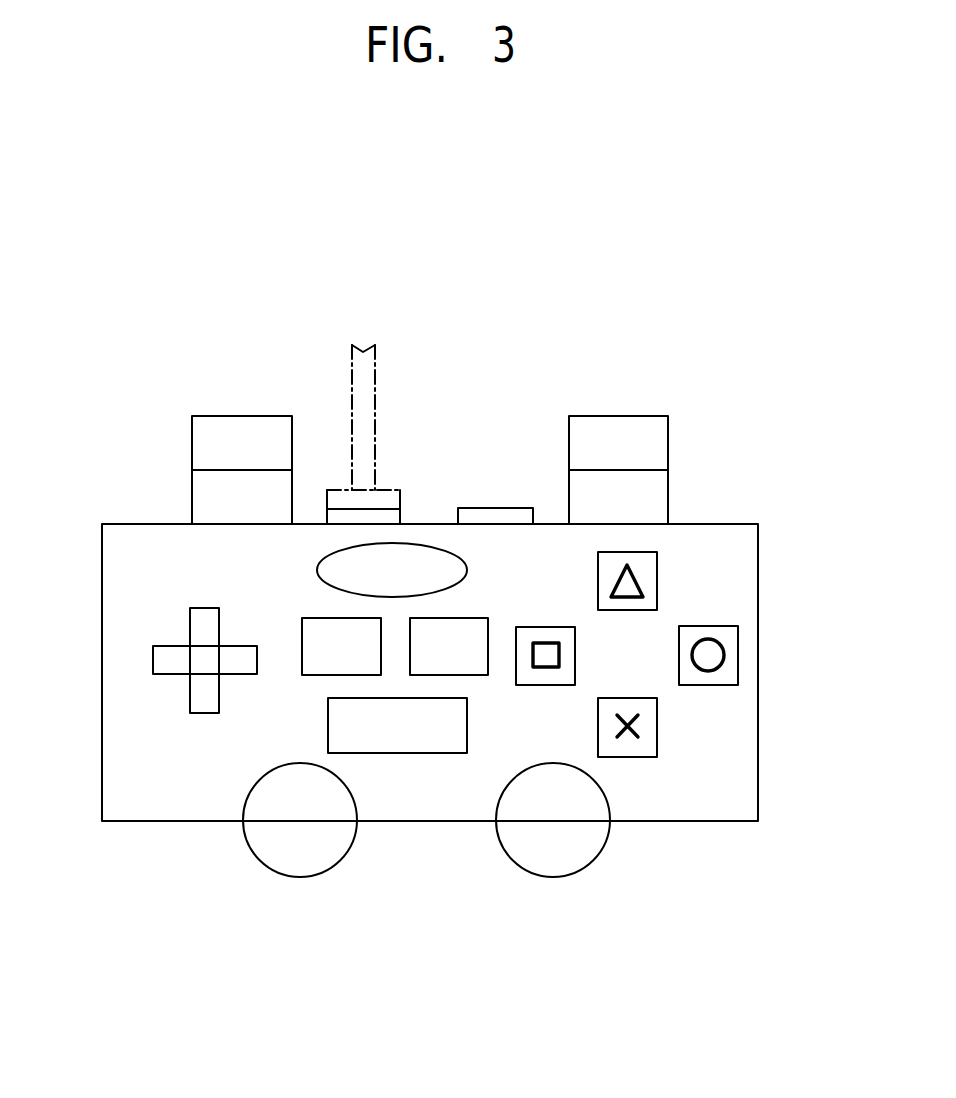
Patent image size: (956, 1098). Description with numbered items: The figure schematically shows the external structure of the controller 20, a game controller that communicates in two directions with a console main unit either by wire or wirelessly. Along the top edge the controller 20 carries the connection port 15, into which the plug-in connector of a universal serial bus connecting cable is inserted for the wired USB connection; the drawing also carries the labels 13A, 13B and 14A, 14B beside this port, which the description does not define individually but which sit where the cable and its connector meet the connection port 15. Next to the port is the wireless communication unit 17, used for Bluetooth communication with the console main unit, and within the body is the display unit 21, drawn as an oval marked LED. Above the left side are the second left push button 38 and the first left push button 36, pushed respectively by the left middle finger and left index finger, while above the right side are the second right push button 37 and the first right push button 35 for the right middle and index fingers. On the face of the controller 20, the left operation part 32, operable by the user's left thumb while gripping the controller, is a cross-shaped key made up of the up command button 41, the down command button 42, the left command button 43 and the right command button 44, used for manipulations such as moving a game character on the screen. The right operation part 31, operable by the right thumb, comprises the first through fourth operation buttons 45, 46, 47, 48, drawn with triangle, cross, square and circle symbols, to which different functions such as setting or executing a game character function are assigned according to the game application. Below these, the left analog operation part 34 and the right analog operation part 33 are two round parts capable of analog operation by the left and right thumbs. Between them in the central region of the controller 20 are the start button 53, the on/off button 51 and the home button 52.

The analog stick 13A is at (458, 414).
The analog stick 13B is at (375, 397).
The stick operating portion 14A is at (440, 472).
The stick operating portion 14B is at (400, 492).
The connection port 15 is at (409, 435).
The wireless communication unit 17 is at (488, 508).
The controller 20 is at (758, 713).
The display unit 21 is at (320, 573).
The right operation part 31 is at (682, 700).
The left operation part 32 is at (142, 755).
The right analog operation part 33 is at (562, 863).
The left analog operation part 34 is at (298, 863).
The first right push button 35 is at (655, 498).
The first left push button 36 is at (208, 503).
The second right push button 37 is at (655, 447).
The second left push button 38 is at (208, 447).
The up command button 41 is at (203, 633).
The down command button 42 is at (200, 692).
The left command button 43 is at (165, 666).
The right command button 44 is at (229, 665).
The first operation button 45 is at (730, 655).
The second operation button 46 is at (630, 752).
The third operation button 47 is at (571, 652).
The fourth operation button 48 is at (645, 567).
The on/off button 51 is at (467, 667).
The home button 52 is at (429, 747).
The start button 53 is at (312, 663).